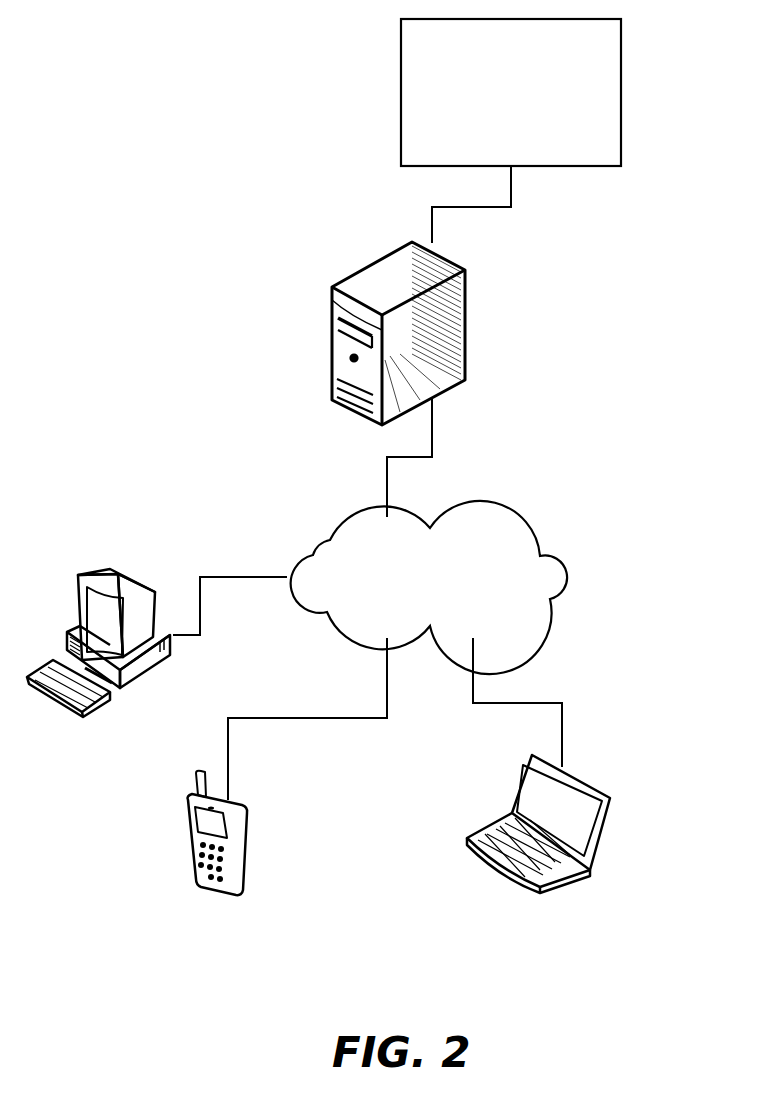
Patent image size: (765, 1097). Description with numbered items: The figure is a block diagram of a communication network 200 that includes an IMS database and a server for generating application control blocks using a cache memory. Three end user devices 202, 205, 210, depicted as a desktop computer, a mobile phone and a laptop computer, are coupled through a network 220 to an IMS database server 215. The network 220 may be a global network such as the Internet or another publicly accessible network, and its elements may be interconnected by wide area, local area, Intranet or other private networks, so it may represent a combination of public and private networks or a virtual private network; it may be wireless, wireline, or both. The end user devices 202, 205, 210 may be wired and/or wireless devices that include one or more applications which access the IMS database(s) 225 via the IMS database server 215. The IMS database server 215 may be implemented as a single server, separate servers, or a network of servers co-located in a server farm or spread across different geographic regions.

The system 200 is at (143, 136).
The end user device 202 is at (93, 573).
The end user device 205 is at (248, 878).
The end user device 210 is at (602, 787).
The IMS database server 215 is at (465, 295).
The network 220 is at (429, 587).
The IMS database(s) 225 is at (511, 92).